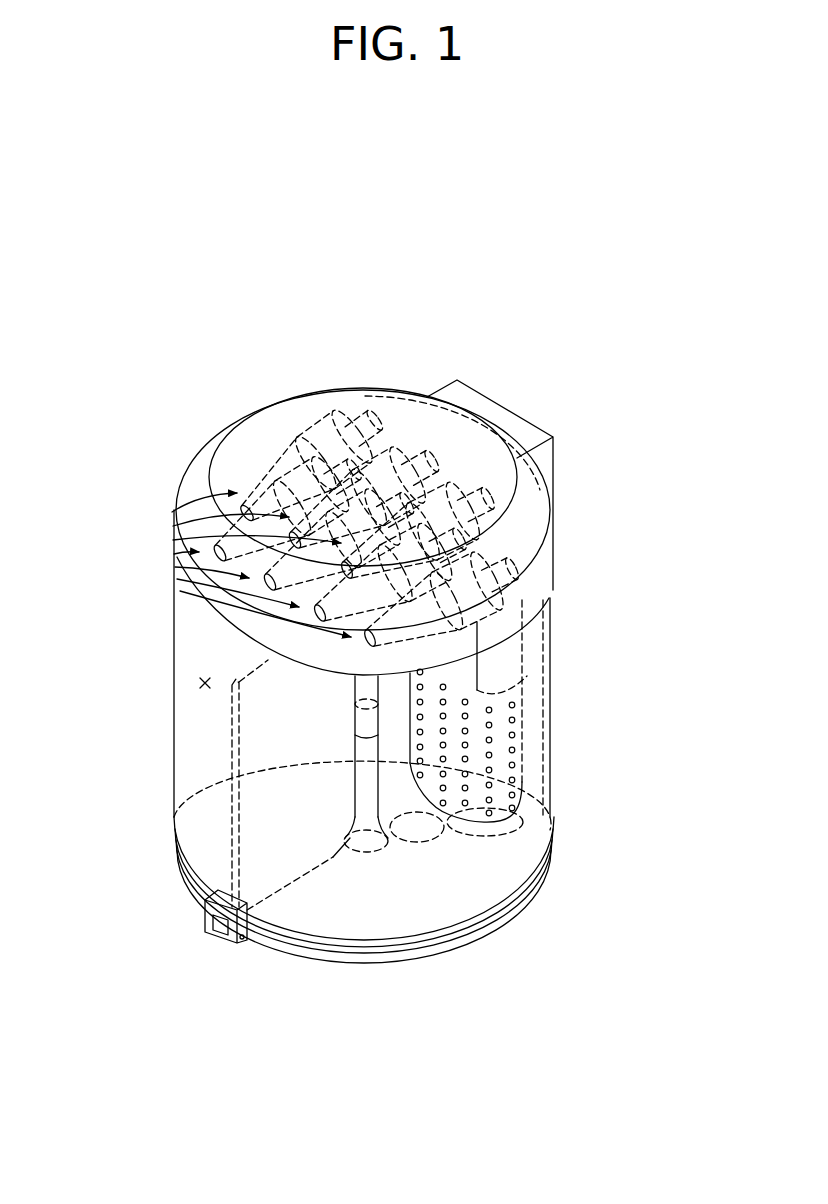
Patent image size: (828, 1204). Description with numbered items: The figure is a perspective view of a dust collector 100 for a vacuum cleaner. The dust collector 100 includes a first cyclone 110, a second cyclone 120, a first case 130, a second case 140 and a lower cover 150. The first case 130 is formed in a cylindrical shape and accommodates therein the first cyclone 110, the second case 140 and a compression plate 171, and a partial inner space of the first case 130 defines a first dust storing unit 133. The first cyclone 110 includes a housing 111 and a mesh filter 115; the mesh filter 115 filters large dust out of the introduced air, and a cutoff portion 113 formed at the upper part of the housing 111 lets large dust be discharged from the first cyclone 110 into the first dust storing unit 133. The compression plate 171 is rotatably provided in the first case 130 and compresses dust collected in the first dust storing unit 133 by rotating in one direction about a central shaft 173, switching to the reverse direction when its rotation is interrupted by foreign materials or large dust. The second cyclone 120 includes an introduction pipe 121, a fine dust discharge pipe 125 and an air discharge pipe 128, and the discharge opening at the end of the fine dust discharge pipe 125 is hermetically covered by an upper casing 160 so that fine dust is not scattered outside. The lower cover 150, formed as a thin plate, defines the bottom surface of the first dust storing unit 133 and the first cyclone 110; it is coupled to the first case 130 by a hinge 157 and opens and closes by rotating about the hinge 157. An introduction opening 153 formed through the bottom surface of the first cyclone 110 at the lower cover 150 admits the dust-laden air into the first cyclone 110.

The dust collector 100 is at (231, 336).
The first cyclone 110 is at (623, 662).
The housing 111 is at (535, 716).
The cutoff portion 113 is at (538, 658).
The mesh filter 115 is at (505, 742).
The second cyclone 120 is at (370, 638).
The introduction pipe 121 is at (442, 497).
The fine dust discharge pipe 125 is at (407, 510).
The air discharge pipe 128 is at (470, 490).
The first case 130 is at (174, 700).
The first dust storing unit 133 is at (200, 683).
The second case 140 is at (470, 827).
The lower cover 150 is at (427, 910).
The introduction opening 153 is at (433, 843).
The hinge 157 is at (225, 933).
The upper casing 160 is at (203, 470).
The compression plate 171 is at (293, 870).
The central shaft 173 is at (375, 805).